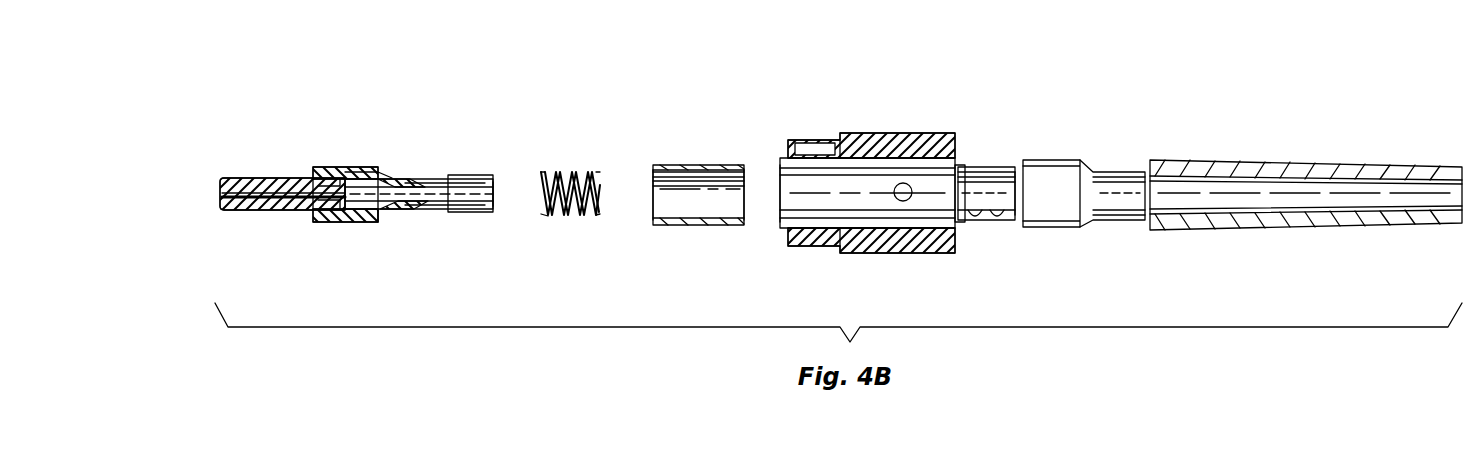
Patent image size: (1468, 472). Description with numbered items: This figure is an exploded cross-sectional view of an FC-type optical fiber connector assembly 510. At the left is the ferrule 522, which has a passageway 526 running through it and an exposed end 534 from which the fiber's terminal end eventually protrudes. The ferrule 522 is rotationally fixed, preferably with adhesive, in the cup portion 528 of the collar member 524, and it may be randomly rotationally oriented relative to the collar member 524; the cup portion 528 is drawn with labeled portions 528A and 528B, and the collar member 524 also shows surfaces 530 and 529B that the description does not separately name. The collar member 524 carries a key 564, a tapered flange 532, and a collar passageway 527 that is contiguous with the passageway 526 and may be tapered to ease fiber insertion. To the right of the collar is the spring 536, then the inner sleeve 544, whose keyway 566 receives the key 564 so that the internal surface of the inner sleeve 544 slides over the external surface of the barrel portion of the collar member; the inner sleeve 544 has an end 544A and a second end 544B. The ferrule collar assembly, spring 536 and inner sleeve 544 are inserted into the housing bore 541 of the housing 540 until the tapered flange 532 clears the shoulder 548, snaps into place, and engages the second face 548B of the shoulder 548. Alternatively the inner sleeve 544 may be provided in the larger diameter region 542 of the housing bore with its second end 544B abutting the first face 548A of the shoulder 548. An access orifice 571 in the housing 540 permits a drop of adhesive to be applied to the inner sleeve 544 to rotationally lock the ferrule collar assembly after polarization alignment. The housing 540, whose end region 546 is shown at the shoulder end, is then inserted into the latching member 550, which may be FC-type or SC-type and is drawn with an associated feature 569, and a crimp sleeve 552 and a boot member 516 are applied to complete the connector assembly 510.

The exposed end 534 is at (220, 197).
The ferrule 522 is at (238, 180).
The passageway 526 is at (262, 210).
The cup portion 528 is at (324, 165).
The nut first portion 528A is at (322, 222).
The nut second portion 528B is at (340, 222).
The key 564 is at (350, 168).
The collar member 524 is at (408, 176).
The shaft surface 530 is at (430, 181).
The flange 529B is at (375, 212).
The tapered flange 532 is at (468, 214).
The collar passageway 527 is at (494, 198).
The spring 536 is at (586, 170).
The keyway 566 is at (672, 165).
The sleeve proximal end 544A is at (651, 214).
The inner sleeve 544 is at (670, 227).
The second end 544B is at (746, 182).
The larger diameter region 542 is at (778, 168).
The housing bore 541 is at (778, 212).
The groove 569 is at (823, 142).
The latching member 550 is at (893, 133).
The access orifice 571 is at (898, 201).
The first face 548A is at (972, 212).
The shoulder 548 is at (956, 222).
The second face 548B is at (995, 220).
The connector end 546 is at (1008, 216).
The housing 540 is at (983, 165).
The crimp sleeve 552 is at (1086, 160).
The boot member 516 is at (1235, 168).
The assembly 510 is at (937, 68).